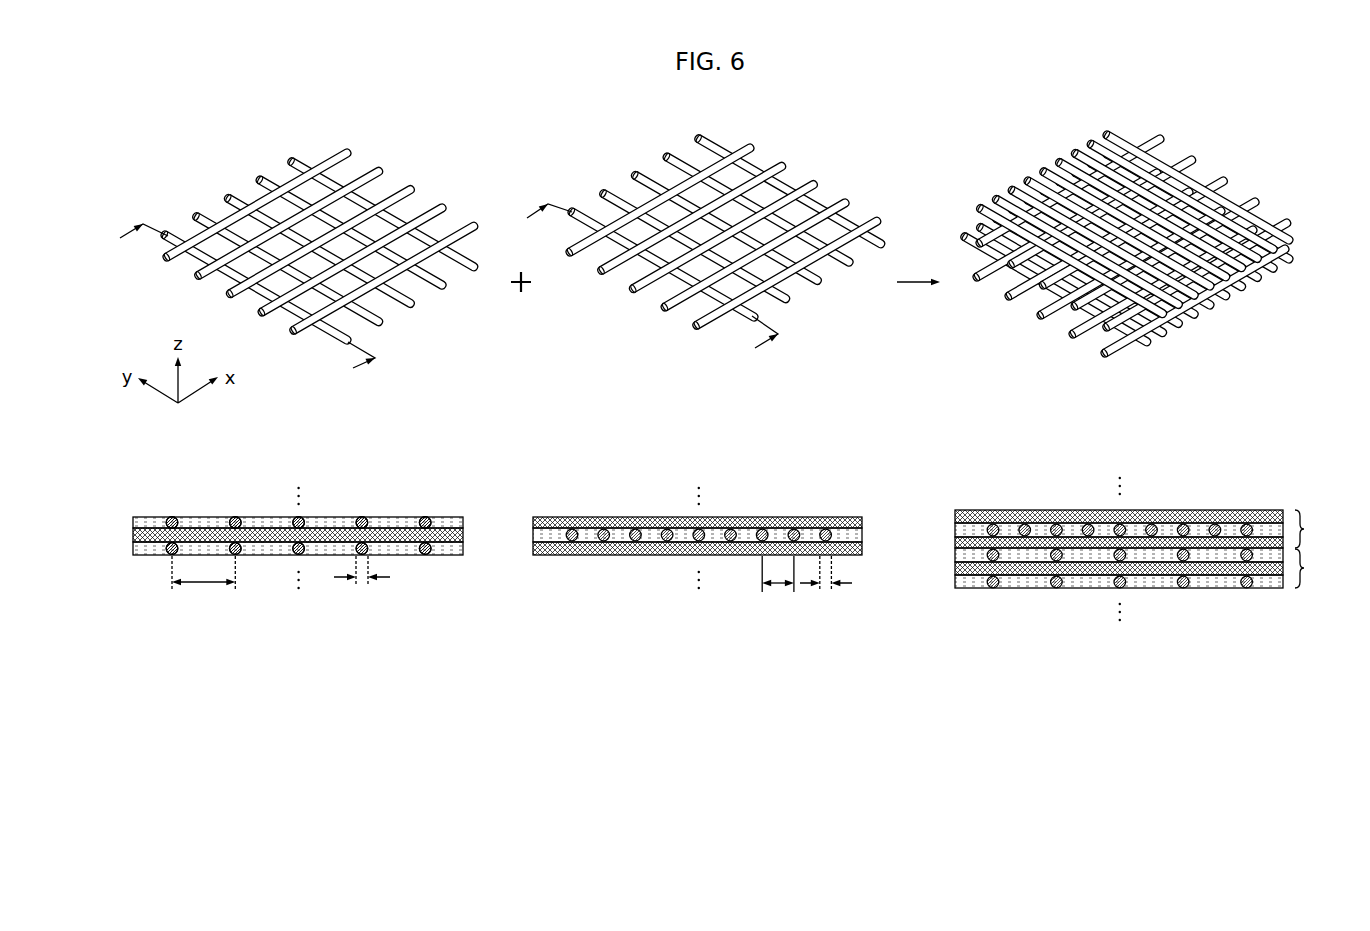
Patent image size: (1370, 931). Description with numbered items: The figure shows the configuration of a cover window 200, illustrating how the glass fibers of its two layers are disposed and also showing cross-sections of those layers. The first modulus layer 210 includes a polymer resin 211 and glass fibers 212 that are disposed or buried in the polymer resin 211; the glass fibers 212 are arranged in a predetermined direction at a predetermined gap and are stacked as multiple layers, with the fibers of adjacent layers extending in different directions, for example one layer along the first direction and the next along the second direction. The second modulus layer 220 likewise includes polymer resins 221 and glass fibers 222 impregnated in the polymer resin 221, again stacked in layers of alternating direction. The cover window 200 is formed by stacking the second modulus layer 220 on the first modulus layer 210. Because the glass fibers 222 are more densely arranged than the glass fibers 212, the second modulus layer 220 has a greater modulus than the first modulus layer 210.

The cover window 200 is at (1218, 481).
The first modulus layer 210 is at (403, 481).
The polymer resin 211 is at (267, 548).
The glass fibers 212 is at (228, 197).
The second modulus layer 220 is at (806, 481).
The polymer resin 221 is at (653, 540).
The glass fibers 222 is at (635, 175).